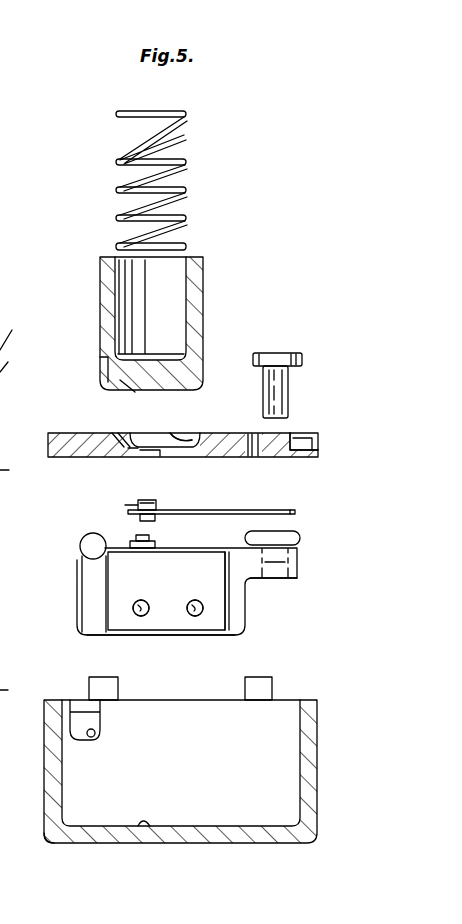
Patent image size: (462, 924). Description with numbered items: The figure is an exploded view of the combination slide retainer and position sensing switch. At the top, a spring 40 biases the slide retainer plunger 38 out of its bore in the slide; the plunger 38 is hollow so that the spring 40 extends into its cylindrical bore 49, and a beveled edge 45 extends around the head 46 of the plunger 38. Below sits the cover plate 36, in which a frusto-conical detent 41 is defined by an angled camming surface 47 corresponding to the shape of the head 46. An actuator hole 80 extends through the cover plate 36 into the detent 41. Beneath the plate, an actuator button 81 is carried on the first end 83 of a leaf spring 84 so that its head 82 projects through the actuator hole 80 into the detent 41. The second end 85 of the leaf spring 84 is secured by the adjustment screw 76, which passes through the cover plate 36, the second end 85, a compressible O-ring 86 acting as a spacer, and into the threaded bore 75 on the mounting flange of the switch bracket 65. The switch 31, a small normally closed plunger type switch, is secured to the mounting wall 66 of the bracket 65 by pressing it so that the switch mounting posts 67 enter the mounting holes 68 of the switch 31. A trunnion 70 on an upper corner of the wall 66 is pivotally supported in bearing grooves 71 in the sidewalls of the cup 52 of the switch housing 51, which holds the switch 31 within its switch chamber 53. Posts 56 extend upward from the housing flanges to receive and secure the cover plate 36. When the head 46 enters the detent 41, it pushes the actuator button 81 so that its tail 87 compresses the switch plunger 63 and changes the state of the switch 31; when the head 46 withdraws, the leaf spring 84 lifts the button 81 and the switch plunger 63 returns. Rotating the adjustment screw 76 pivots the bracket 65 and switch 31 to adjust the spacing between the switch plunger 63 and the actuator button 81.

The spring 40 is at (185, 136).
The slide retainer plunger 38 is at (200, 285).
The cylindrical bore 49 is at (183, 318).
The beveled edge 45 is at (100, 375).
The head 46 is at (127, 386).
The adjustment screw 76 is at (296, 352).
The cover plate 36 is at (48, 442).
The angled camming surface 47 is at (112, 433).
The detent 41 is at (184, 433).
The actuator hole 80 is at (160, 458).
The head 82 is at (138, 504).
The first end 83 is at (130, 506).
The actuator button 81 is at (150, 500).
The leaf spring 84 is at (188, 508).
The second end 85 is at (292, 510).
The O-ring 86 is at (300, 532).
The tail 87 is at (155, 516).
The switch bracket 65 is at (78, 618).
The trunnion 70 is at (84, 538).
The switch plunger 63 is at (138, 538).
The mounting wall 66 is at (203, 552).
The threaded bore 75 is at (298, 565).
The mounting holes 68 is at (188, 603).
The switch mounting posts 67 is at (195, 616).
The switch 31 is at (168, 632).
The switch housing 51 is at (318, 754).
The posts 56 is at (88, 684).
The bearing grooves 71 is at (95, 738).
The cup 52 is at (60, 842).
The switch chamber 53 is at (147, 832).